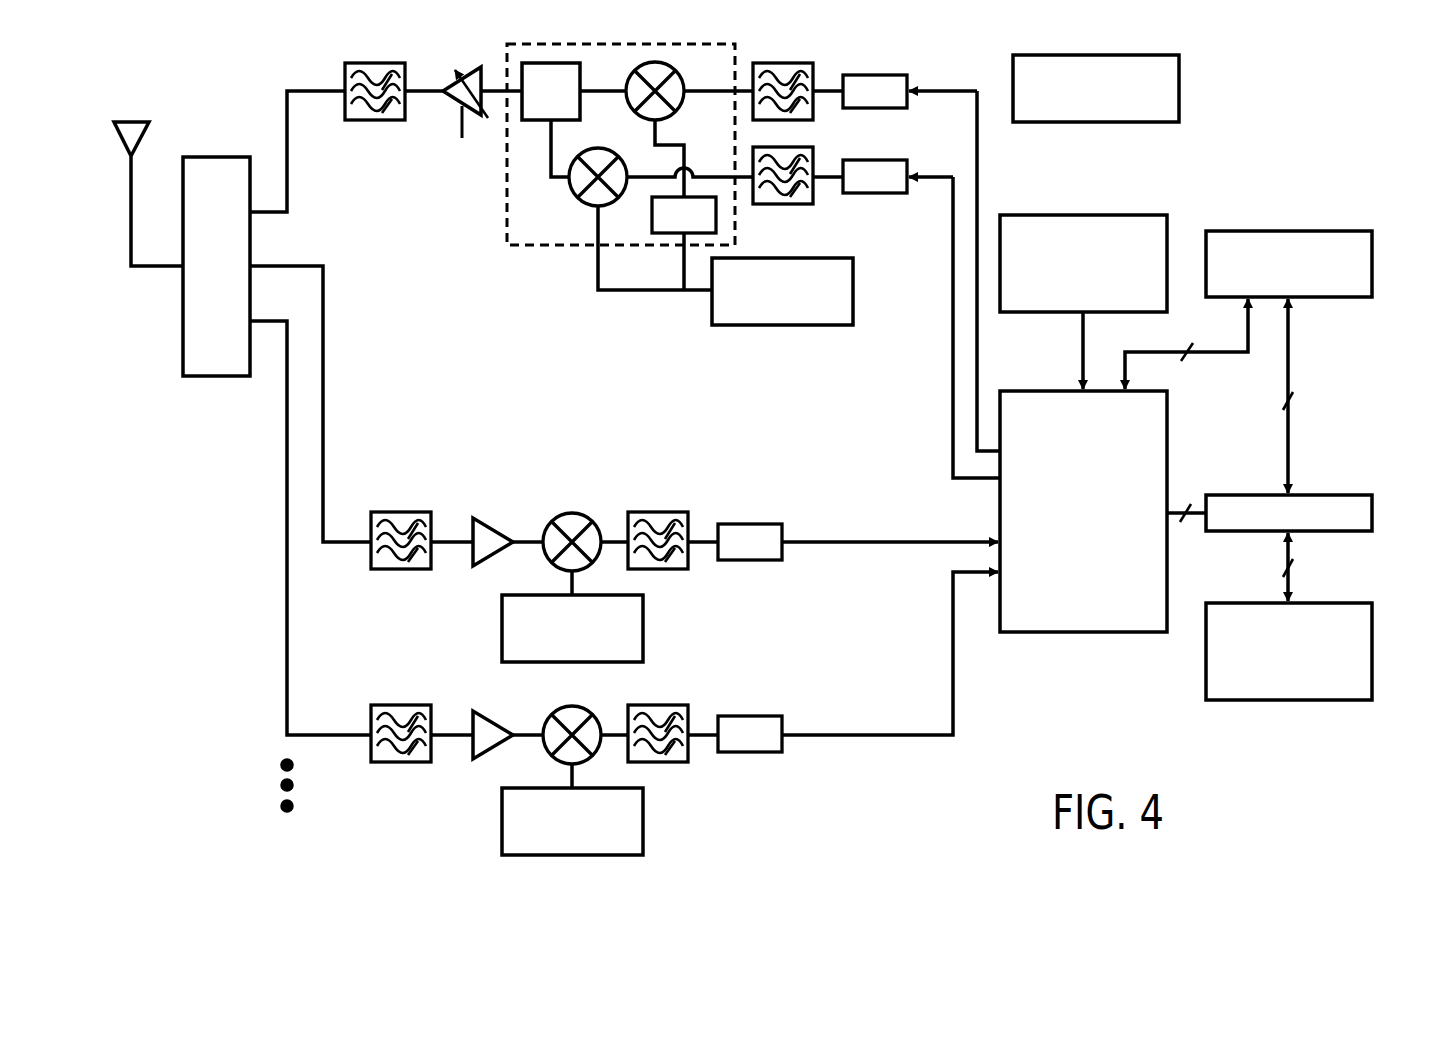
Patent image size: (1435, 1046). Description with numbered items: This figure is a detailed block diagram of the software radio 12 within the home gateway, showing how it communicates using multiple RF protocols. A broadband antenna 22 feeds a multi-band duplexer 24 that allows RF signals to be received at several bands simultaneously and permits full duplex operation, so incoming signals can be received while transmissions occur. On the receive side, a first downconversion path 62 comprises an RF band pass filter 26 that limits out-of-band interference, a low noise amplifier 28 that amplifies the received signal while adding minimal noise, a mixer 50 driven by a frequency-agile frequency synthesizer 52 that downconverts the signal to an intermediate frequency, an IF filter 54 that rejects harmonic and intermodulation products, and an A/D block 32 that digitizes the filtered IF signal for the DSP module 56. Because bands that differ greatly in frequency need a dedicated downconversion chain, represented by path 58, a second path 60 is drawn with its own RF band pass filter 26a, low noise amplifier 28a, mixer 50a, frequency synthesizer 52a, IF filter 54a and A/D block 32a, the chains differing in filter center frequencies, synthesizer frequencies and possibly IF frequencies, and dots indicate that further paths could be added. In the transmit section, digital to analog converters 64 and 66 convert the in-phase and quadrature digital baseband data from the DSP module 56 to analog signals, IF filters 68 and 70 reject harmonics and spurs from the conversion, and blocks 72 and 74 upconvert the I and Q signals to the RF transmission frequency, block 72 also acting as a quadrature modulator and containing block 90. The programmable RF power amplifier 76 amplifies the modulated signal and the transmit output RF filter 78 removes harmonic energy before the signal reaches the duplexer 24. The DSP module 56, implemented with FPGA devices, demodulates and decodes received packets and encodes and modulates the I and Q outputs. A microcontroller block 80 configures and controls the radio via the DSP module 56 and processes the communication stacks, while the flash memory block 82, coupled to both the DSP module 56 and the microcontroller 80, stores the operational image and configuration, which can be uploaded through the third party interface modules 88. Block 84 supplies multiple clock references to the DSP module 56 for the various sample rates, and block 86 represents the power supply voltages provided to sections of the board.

The software radio 12 is at (282, 66).
The antenna 22 is at (140, 138).
The multi-band duplexer 24 is at (183, 331).
The RF band pass filter 26 is at (398, 572).
The receive band filter 26a is at (398, 764).
The low noise amplifier 28 is at (497, 525).
The amplifier 28a is at (497, 718).
The A/D block 32 is at (752, 524).
The analog-to-digital converter 32a is at (752, 716).
The mixer 50 is at (579, 514).
The mixer 50a is at (579, 707).
The frequency synthesizer 52 is at (643, 623).
The frequency synthesizer 52a is at (643, 819).
The IF filter 54 is at (660, 512).
The filter 54a is at (660, 705).
The DSP module 56 is at (1083, 632).
The path 58 is at (264, 705).
The path 60 is at (792, 795).
The path 62 is at (437, 450).
The digital to analog converter 64 is at (876, 75).
The digital to analog converter 66 is at (876, 193).
The IF filter 68 is at (790, 63).
The IF filter 70 is at (780, 205).
The upconverter block 72 is at (540, 245).
The upconverter block 74 is at (853, 291).
The RF power amplifier 76 is at (474, 67).
The transmit output RF filter 78 is at (372, 63).
The microcontroller block 80 is at (1335, 495).
The flash memory block 82 is at (1293, 231).
The multiple clock references block 84 is at (1080, 215).
The power supply block 86 is at (1179, 89).
The third party interface modules 88 is at (1372, 656).
The phase shifter 90 is at (684, 215).